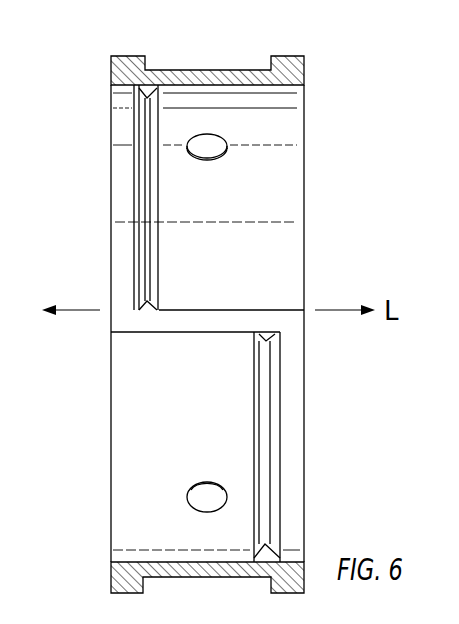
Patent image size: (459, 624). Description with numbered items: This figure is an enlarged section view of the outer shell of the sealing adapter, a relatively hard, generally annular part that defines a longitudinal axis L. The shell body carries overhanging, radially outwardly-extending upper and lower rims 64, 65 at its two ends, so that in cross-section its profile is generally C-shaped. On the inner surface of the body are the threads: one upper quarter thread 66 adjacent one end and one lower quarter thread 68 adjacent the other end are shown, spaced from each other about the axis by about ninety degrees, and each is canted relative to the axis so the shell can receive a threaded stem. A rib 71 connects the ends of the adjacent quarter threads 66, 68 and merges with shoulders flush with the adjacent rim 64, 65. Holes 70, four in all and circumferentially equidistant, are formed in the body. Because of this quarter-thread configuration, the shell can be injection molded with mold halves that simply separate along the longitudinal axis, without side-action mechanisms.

The upper rim 64 is at (292, 63).
The lower rim 65 is at (132, 63).
The upper quarter thread 66 is at (272, 432).
The lower quarter thread 68 is at (147, 188).
The hole 70 is at (205, 145).
The rib 71 is at (212, 320).